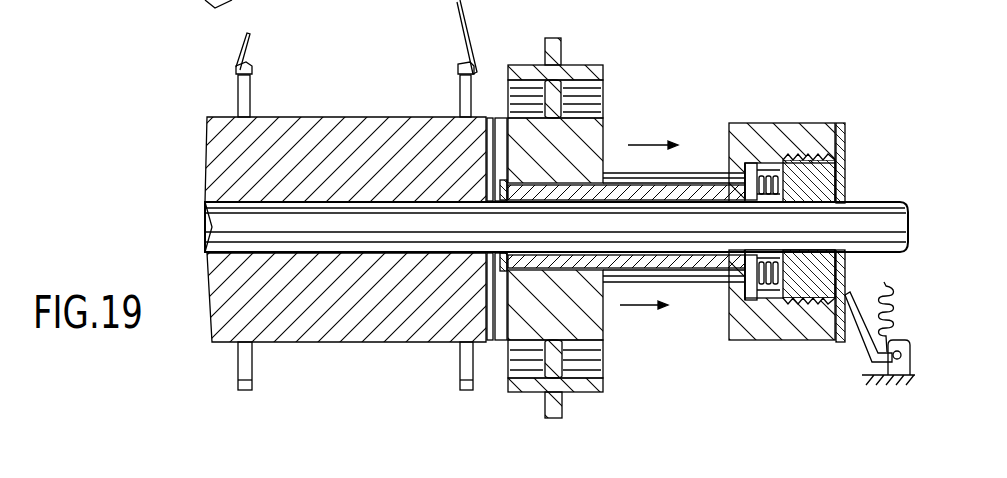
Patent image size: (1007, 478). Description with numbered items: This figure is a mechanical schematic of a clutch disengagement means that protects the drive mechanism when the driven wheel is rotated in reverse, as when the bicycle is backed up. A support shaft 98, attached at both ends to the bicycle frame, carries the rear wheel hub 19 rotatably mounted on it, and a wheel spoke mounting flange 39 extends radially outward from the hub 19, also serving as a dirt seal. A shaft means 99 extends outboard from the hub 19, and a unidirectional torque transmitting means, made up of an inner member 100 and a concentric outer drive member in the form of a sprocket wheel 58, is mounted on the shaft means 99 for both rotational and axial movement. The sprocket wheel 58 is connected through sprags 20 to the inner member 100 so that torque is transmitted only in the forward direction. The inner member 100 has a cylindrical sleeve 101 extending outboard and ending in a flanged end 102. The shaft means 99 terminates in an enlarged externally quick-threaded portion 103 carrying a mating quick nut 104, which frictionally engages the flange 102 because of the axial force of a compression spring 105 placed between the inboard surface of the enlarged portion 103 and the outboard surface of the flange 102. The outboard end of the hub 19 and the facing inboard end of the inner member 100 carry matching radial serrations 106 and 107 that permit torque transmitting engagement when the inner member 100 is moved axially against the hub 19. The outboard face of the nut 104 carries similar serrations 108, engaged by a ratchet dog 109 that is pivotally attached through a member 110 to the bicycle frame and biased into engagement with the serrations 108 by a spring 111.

The rear wheel hub 19 is at (352, 126).
The wheel spoke mounting flange 39 is at (458, 86).
The radial serrations 106 is at (490, 117).
The radial serrations 107 is at (500, 117).
The sprocket wheel 58 is at (562, 52).
The sprags 20 is at (563, 100).
The inner member 100 is at (597, 130).
The shaft means 99 is at (678, 196).
The cylindrical sleeve 101 is at (678, 270).
The flanged end 102 is at (738, 306).
The quick nut 104 is at (765, 136).
The enlarged externally quick-threaded portion 103 is at (818, 176).
The compression spring 105 is at (762, 300).
The serrations 108 is at (841, 130).
The support shaft 98 is at (876, 212).
The ratchet dog 109 is at (857, 338).
The pivot member 110 is at (893, 378).
The spring 111 is at (884, 286).